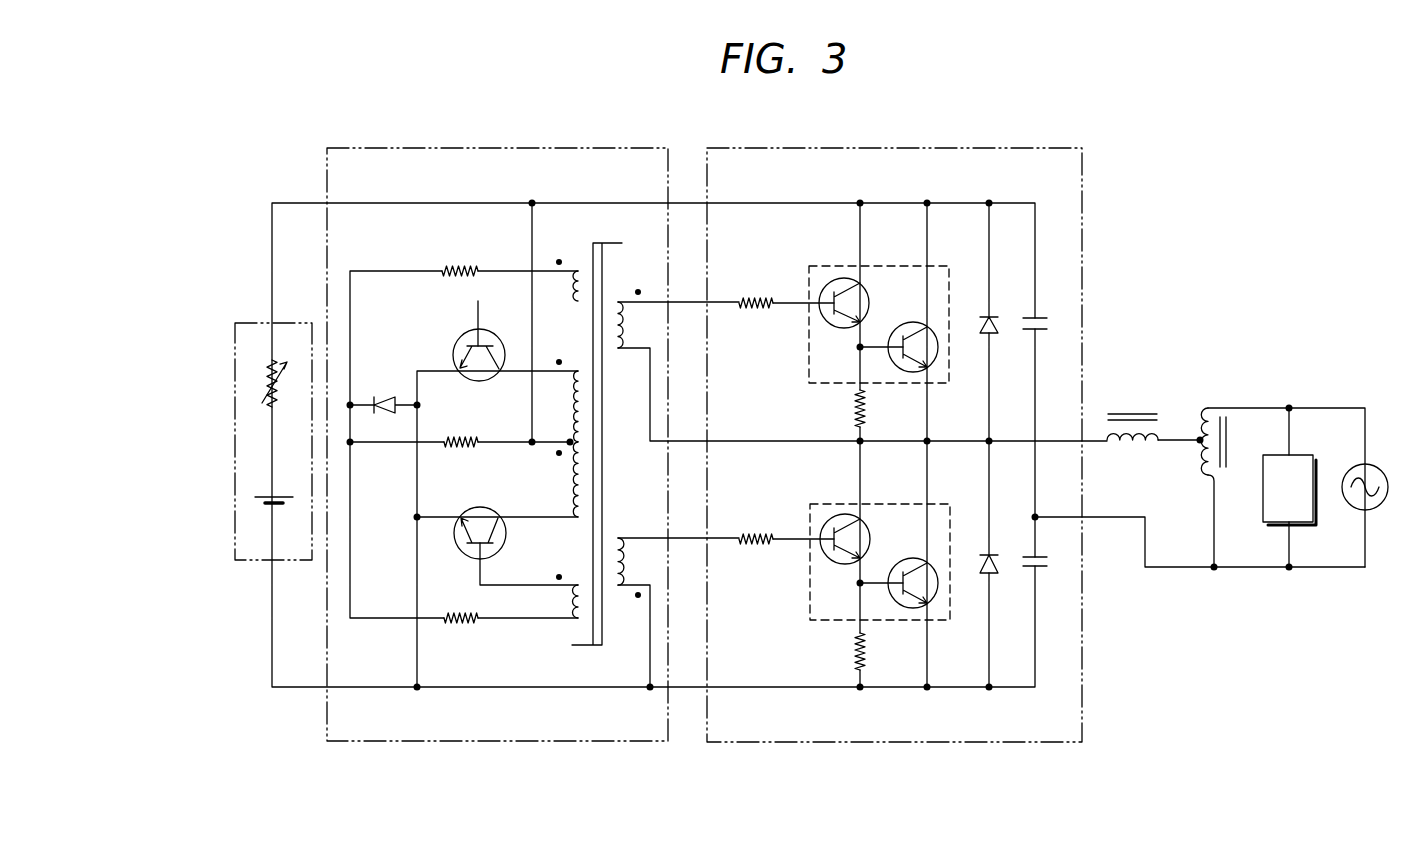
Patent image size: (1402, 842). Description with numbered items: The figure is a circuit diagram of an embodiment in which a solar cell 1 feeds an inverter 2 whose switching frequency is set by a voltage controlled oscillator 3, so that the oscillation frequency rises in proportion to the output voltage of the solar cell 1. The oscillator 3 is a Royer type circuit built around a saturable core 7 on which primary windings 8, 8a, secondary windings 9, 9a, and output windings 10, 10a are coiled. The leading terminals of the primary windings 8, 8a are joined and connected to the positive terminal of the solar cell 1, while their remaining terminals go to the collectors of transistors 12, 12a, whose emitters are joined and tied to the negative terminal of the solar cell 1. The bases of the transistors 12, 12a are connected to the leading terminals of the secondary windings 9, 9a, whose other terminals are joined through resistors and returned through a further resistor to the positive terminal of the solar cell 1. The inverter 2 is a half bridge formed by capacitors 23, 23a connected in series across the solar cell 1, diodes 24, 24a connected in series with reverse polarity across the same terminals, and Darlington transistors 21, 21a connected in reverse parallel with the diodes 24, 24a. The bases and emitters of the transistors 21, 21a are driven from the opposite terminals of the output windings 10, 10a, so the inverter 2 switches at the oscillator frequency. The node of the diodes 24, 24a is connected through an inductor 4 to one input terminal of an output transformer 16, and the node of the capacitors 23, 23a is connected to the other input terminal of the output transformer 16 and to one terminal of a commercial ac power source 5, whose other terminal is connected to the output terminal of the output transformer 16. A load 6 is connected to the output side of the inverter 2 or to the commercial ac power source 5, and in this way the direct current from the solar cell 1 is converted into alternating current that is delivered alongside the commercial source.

The solar cell 1 is at (245, 322).
The inverter 2 is at (1056, 147).
The voltage controlled oscillator 3 is at (647, 147).
The inductor 4 is at (1158, 427).
The commercial ac power source 5 is at (1350, 470).
The load 6 is at (1272, 455).
The saturable core 7 is at (597, 243).
The primary winding 8 is at (570, 398).
The primary winding 8a is at (570, 478).
The secondary winding 9 is at (578, 270).
The secondary winding 9a is at (573, 622).
The output winding 10 is at (618, 350).
The output winding 10a is at (618, 538).
The transistor 12 is at (465, 333).
The transistor 12a is at (473, 507).
The output transformer 16 is at (1204, 408).
The transistor 21 is at (825, 264).
The transistor 21a is at (824, 502).
The capacitor 23 is at (1047, 320).
The capacitor 23a is at (1047, 565).
The diode 24 is at (998, 318).
The diode 24a is at (998, 565).